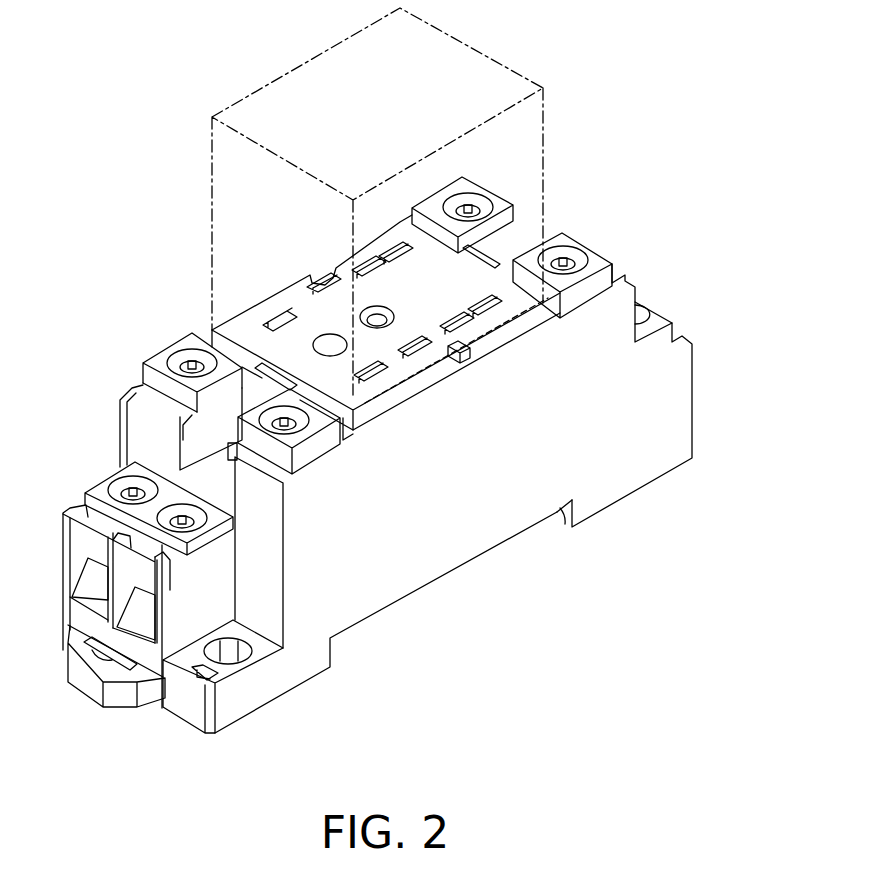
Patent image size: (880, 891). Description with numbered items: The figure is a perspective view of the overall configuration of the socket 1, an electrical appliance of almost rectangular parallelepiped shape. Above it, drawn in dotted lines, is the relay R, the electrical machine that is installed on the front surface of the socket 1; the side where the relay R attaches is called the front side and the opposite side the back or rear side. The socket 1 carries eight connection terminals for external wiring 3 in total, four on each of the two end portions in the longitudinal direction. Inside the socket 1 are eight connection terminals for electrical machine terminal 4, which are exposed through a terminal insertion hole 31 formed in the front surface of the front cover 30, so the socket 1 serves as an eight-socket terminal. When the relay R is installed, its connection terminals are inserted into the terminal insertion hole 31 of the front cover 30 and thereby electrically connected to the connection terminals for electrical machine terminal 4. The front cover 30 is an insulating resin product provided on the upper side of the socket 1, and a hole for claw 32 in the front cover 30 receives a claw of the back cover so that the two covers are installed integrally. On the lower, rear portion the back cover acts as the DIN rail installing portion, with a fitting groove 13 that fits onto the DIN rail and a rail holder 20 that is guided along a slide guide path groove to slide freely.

The socket 1 is at (384, 462).
The relay R is at (210, 181).
The connection terminal for external wiring 3 is at (280, 483).
The connection terminal for electrical machine terminal 4 is at (272, 318).
The fitting groove 13 is at (557, 514).
The rail holder 20 is at (88, 692).
The front cover 30 is at (693, 397).
The terminal insertion hole 31 is at (386, 322).
The hole for claw 32 is at (205, 681).